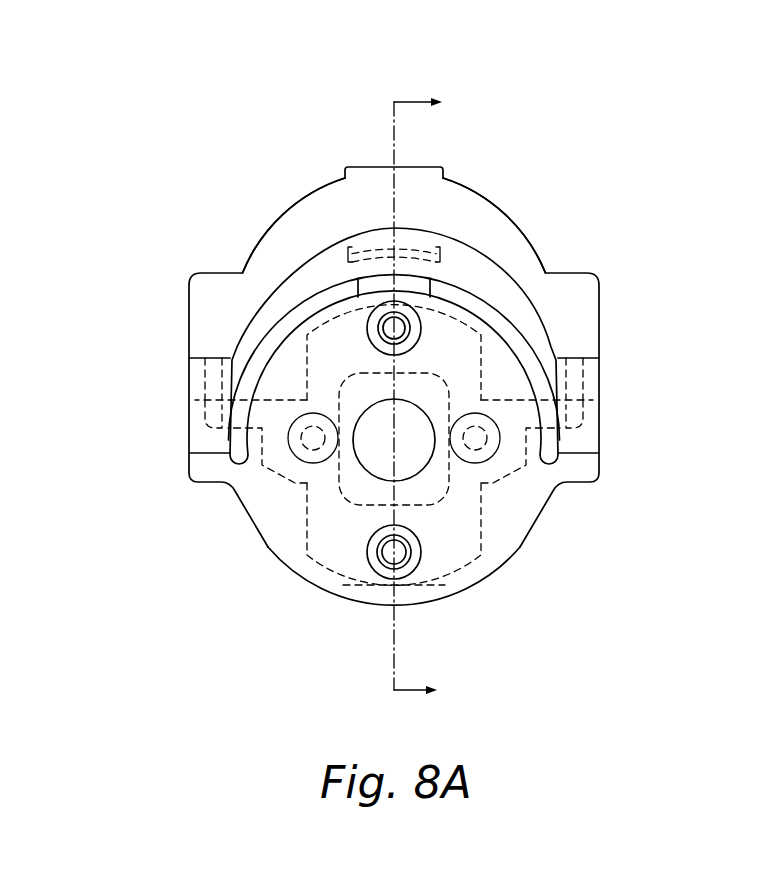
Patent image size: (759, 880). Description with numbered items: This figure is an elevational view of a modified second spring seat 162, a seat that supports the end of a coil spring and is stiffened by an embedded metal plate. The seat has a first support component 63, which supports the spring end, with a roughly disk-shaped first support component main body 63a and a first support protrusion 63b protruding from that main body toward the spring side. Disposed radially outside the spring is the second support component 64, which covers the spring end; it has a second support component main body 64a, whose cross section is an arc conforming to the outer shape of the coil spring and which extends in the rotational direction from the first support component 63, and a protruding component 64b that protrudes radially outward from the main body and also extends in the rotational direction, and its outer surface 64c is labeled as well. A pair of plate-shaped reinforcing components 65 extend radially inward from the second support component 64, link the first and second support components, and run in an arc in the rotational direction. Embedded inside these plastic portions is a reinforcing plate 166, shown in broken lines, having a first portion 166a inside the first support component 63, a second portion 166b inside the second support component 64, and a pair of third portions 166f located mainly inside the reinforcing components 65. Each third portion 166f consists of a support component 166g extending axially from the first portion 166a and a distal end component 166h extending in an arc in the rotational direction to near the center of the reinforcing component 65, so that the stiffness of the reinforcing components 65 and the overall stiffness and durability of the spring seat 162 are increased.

The second spring seat 162 is at (395, 385).
The second support component 64 is at (445, 158).
The second support component main body 64a is at (308, 207).
The protruding component 64b is at (373, 173).
The outer peripheral surface of bearing holder 64c is at (283, 212).
The reinforcing component 65 is at (197, 407).
The first support component 63 is at (371, 472).
The first support component main body 63a is at (487, 532).
The first support protrusion 63b is at (377, 453).
The reinforcing plate 166 is at (395, 413).
The first portion 166a is at (348, 575).
The second portion 166b is at (437, 230).
The third portion 166f is at (198, 428).
The support component 166g is at (290, 448).
The distal end component 166h is at (190, 358).